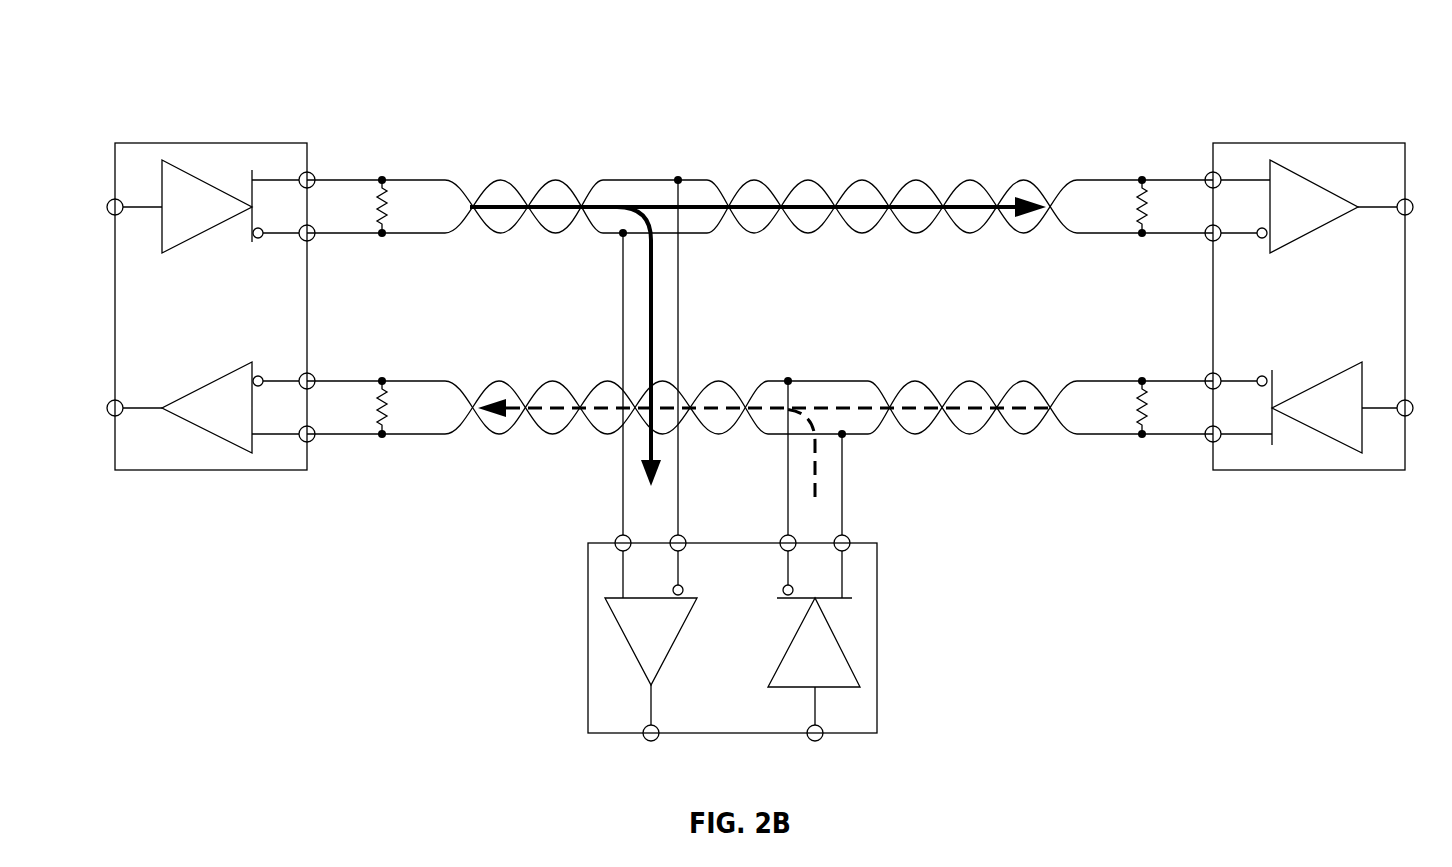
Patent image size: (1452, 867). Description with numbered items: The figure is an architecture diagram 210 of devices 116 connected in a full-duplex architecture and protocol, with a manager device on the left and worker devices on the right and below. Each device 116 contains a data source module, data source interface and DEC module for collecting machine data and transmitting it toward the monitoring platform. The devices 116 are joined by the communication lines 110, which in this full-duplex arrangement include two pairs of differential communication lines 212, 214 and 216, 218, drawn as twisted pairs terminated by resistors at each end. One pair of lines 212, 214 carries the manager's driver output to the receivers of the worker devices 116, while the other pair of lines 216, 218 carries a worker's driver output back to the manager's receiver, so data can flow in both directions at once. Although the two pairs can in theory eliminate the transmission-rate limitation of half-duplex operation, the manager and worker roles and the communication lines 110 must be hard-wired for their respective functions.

The architecture diagram 210 is at (1375, 96).
The communication lines 110 is at (1210, 145).
The device 116 is at (250, 143).
The differential communication line 212 is at (412, 180).
The differential communication line 214 is at (404, 235).
The differential communication line 216 is at (413, 381).
The differential communication line 218 is at (414, 434).